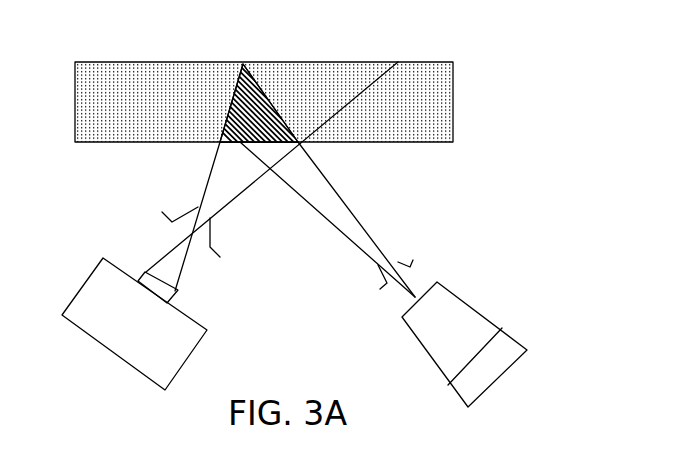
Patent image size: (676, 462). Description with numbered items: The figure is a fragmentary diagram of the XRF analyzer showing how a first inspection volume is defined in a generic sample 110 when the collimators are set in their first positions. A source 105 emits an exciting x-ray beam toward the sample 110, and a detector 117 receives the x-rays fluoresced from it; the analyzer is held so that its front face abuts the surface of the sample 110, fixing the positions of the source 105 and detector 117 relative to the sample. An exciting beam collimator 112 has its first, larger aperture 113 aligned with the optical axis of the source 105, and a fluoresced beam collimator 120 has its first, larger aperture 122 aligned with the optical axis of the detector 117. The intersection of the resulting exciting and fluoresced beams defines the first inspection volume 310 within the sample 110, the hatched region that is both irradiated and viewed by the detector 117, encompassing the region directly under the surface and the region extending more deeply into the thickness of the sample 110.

The sample 110 is at (453, 102).
The first inspection volume 310 is at (253, 108).
The detector 117 is at (112, 353).
The source 105 is at (497, 381).
The first, larger aperture of fluoresced beam collimator 122 is at (203, 210).
The fluoresced beam collimator 120 is at (210, 252).
The first, larger aperture of exciting beam collimator 113 is at (380, 262).
The exciting beam collimator 112 is at (383, 284).